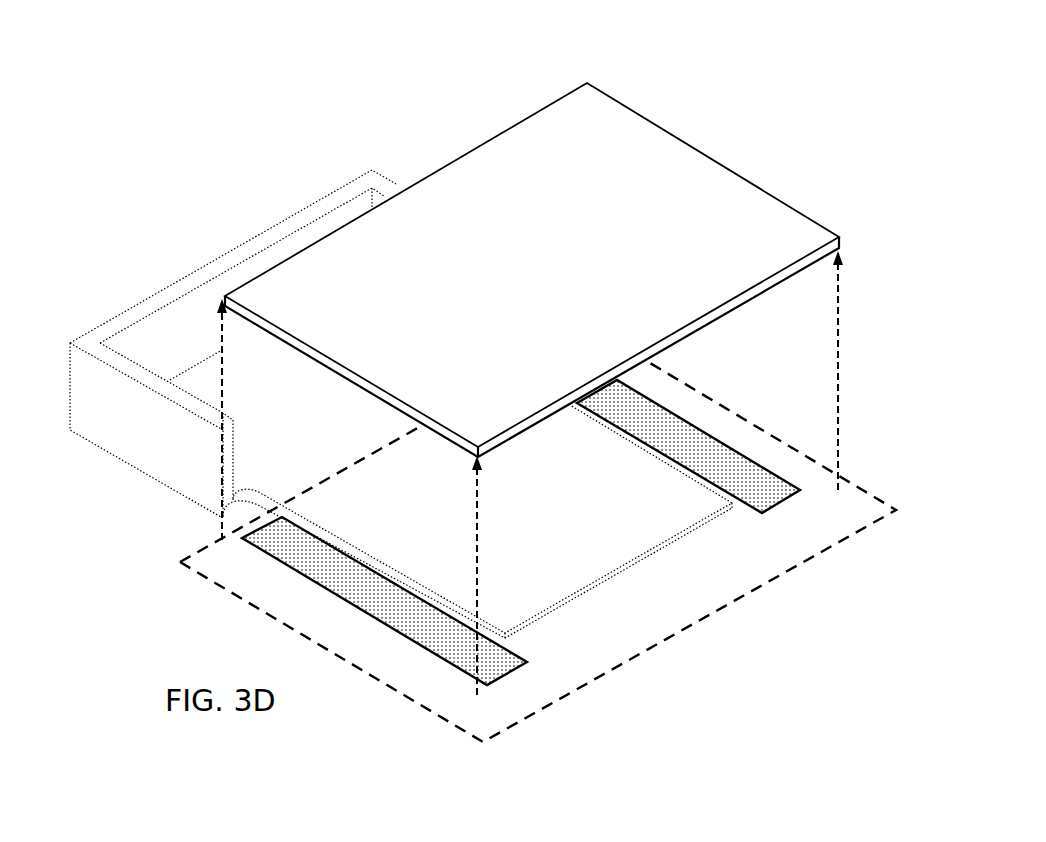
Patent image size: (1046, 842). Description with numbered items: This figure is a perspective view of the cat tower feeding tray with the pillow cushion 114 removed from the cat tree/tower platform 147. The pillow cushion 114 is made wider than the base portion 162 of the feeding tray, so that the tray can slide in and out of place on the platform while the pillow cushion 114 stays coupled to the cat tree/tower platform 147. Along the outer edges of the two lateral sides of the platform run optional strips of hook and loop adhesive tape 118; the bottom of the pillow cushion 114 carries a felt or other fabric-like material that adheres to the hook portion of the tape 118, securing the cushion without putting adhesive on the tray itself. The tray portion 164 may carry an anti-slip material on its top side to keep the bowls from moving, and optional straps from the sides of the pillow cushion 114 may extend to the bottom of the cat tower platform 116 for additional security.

The pillow cushion 114 is at (676, 205).
The bottom of the cat tower platform 116 is at (640, 568).
The hook and loop adhesive tape 118 is at (350, 618).
The cat tree/tower platform 147 is at (853, 512).
The base portion 162 is at (715, 520).
The tray portion 164 is at (380, 177).